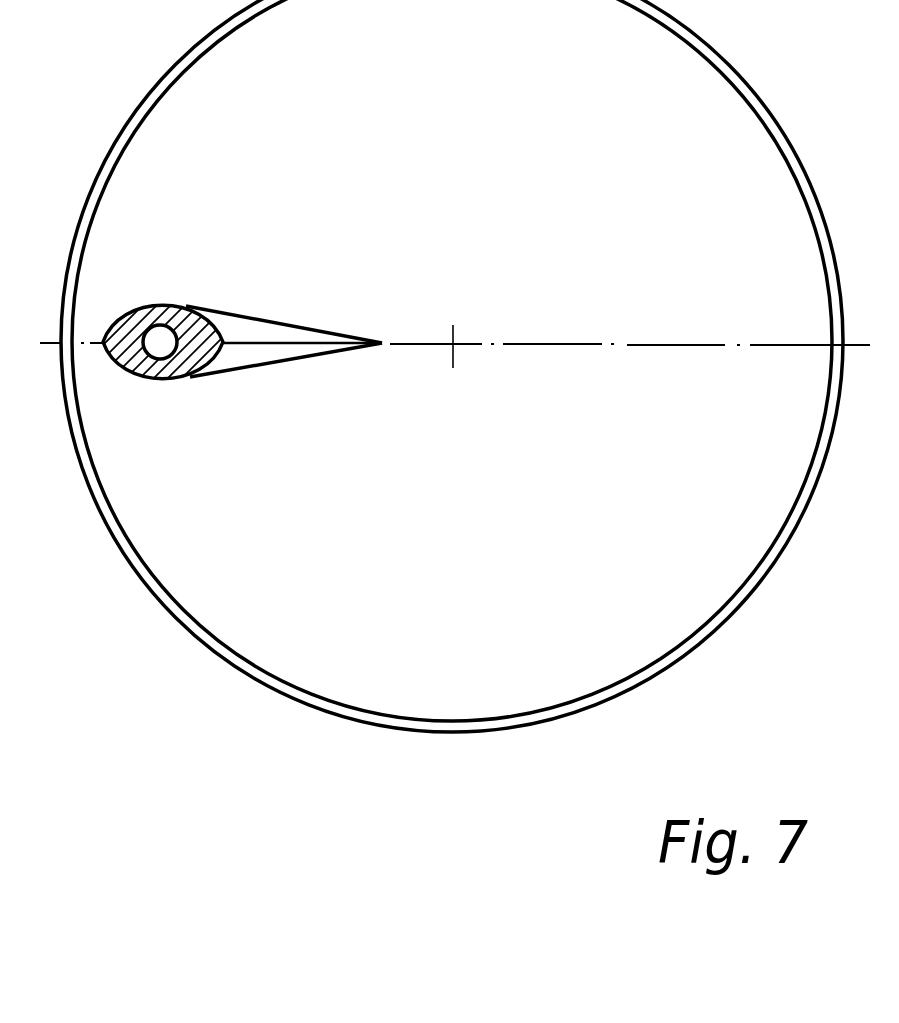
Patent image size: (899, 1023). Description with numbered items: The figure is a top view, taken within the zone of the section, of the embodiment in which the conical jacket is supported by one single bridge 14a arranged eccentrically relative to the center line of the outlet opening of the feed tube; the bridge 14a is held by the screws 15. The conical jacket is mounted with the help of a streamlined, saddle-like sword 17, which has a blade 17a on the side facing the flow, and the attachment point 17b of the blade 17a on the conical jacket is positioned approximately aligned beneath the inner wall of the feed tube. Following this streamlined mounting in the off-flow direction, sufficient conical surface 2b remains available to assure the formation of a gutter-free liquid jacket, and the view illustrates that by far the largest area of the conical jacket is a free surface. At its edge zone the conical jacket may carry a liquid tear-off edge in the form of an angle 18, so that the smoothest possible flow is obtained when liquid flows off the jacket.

The conical surface 2b is at (90, 341).
The bridge 14a is at (168, 308).
The screws 15 is at (161, 347).
The sword 17 is at (243, 332).
The blade 17a is at (308, 340).
The attachment point 17b is at (345, 343).
The angle 18 is at (155, 577).